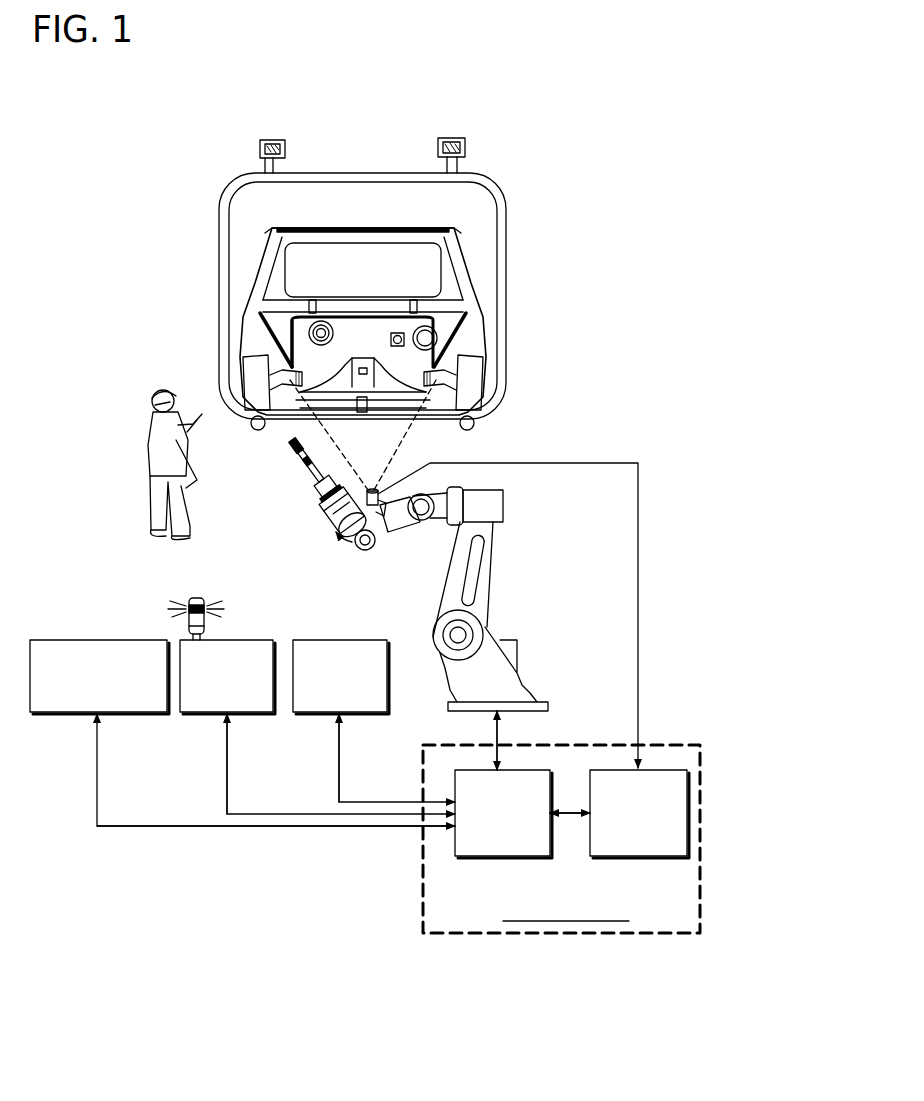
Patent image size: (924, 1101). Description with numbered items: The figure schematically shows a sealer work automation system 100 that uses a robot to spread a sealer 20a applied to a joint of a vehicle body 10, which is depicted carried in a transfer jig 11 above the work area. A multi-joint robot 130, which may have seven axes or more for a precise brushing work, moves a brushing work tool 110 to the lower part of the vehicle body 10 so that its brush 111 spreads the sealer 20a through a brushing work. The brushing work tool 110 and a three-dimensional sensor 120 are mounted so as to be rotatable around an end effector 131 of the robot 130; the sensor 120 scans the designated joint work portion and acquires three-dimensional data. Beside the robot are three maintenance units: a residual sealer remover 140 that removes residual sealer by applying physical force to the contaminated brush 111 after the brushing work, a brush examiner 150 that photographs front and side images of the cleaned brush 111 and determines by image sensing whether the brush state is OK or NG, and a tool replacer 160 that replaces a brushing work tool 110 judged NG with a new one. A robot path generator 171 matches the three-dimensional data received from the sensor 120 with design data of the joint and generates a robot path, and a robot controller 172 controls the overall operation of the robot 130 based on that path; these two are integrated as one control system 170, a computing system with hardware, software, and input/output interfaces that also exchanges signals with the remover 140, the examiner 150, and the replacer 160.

The vehicle body 10 is at (238, 320).
The transfer jig 11 is at (219, 241).
The sealer 20a is at (329, 300).
The sealer work automation system 100 is at (339, 905).
The brushing work tool 110 is at (302, 502).
The brush 111 is at (311, 467).
The 3D sensor 120 is at (397, 535).
The robot 130 is at (503, 506).
The end effector 131 is at (318, 491).
The residual sealer remover 140 is at (110, 640).
The brush examiner 150 is at (248, 640).
The tool replacer 160 is at (336, 640).
The control system 170 is at (561, 874).
The robot path generator 171 is at (655, 858).
The robot controller 172 is at (483, 858).